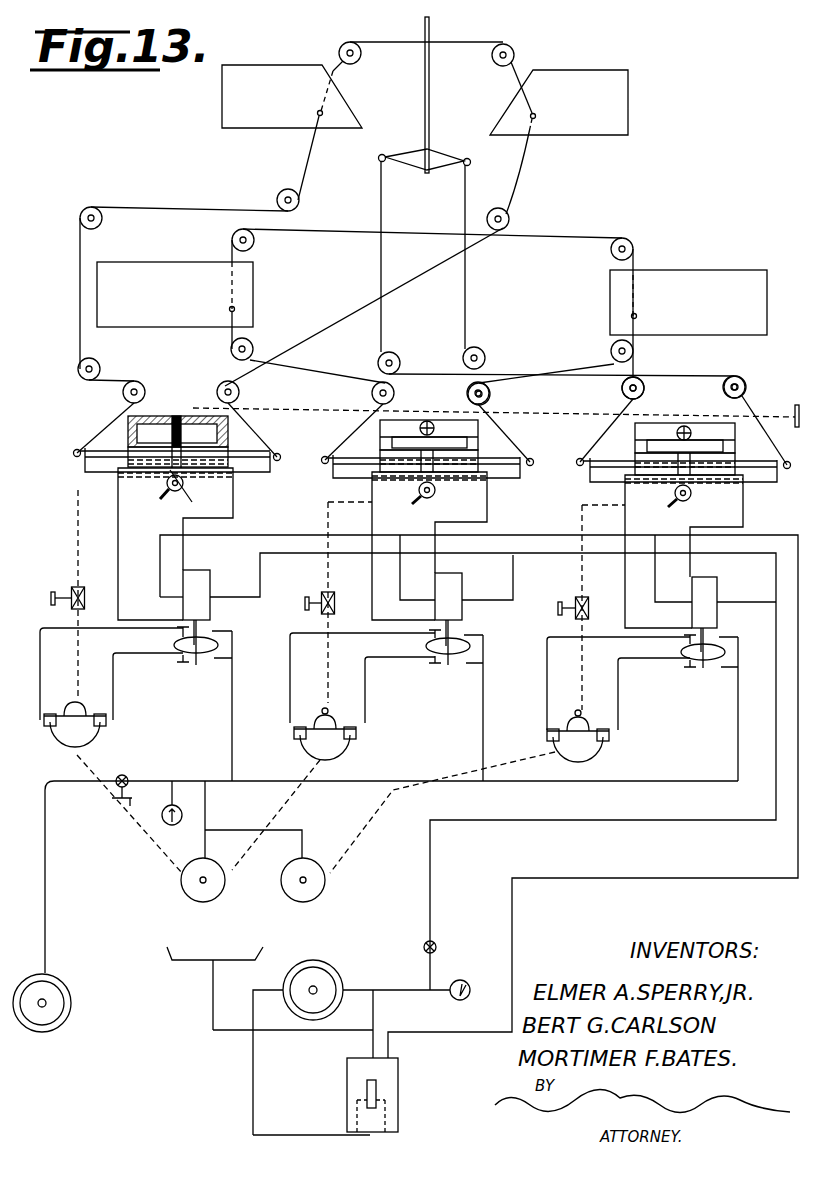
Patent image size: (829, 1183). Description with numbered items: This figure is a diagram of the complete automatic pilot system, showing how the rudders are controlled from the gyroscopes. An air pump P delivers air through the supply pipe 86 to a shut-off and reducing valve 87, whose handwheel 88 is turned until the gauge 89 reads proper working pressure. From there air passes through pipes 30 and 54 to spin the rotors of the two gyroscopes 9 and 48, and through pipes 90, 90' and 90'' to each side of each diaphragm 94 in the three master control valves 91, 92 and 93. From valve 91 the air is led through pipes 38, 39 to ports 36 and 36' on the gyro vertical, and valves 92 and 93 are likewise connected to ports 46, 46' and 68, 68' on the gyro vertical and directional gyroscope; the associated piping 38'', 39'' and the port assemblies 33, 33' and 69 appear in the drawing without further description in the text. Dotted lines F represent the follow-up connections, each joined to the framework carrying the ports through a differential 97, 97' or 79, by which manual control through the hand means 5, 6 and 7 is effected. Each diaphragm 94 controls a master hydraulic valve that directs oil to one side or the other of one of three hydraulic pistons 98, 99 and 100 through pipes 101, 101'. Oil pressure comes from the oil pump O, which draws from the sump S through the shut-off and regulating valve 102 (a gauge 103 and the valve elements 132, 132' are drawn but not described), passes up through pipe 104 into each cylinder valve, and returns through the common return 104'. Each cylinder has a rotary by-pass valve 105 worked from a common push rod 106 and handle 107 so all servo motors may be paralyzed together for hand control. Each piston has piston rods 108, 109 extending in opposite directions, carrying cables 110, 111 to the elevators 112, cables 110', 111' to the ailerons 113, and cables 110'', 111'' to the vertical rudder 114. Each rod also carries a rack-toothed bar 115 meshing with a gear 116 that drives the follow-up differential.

The elevators 112 is at (425, 100).
The vertical rudder 114 is at (429, 96).
The ailerons 113 is at (432, 298).
The cable 110 is at (180, 294).
The cable 110' is at (317, 360).
The cable 110'' is at (667, 396).
The cable 111 is at (364, 307).
The cable 111' is at (541, 435).
The cable 111'' is at (716, 357).
The rotary by-pass valve 105 is at (175, 416).
The push rod 106 is at (541, 411).
The handle 107 is at (800, 403).
The piston rod 109 is at (162, 448).
The piston rod 108 is at (225, 448).
The bar 115 is at (285, 468).
The pipe 101 is at (204, 504).
The pipe 101' is at (77, 490).
The hydraulic piston 98 is at (197, 495).
The gear 116 is at (165, 499).
The hydraulic piston 99 is at (437, 466).
The hydraulic piston 100 is at (690, 470).
The follow-up connection F is at (332, 600).
The common return 104' is at (479, 796).
The pipe 104 is at (493, 762).
The differential 97 is at (94, 583).
The differential gear train 97' is at (347, 587).
The differential connection 79 is at (590, 596).
The knob 6 is at (51, 596).
The adjusting knob 7 is at (305, 600).
The hand means 5 is at (558, 604).
The master control valve 91 is at (210, 607).
The master control valve 92 is at (462, 610).
The master control valve 93 is at (717, 614).
The diaphragm 132 is at (449, 643).
The diaphragm chamber 132' is at (475, 661).
The diaphragm 94 is at (437, 662).
The pipe 38 is at (111, 674).
The pipe 39 is at (148, 686).
The pipe 38'' is at (490, 681).
The pipe 39'' is at (527, 693).
The bellows 33 is at (63, 738).
The bellows 33' is at (312, 741).
The port 36 is at (50, 700).
The port 36' is at (101, 700).
The port 46 is at (306, 709).
The port 46' is at (353, 709).
The port 68 is at (559, 713).
The port 68' is at (605, 713).
The bellows 69 is at (590, 750).
The pipe 90 is at (253, 706).
The pipe 90' is at (461, 708).
The pipe 90'' is at (723, 709).
The supply pipe 86 is at (67, 877).
The air pump P is at (58, 990).
The shut-off and reducing valve 87 is at (128, 776).
The handwheel 88 is at (129, 814).
The gauge 89 is at (188, 806).
The pipe 30 is at (204, 840).
The pipe 54 is at (302, 836).
The gyroscope 9 is at (191, 889).
The gyroscope 48 is at (320, 890).
The oil pump O is at (328, 968).
The shut-off and regulating valve 102 is at (445, 932).
The gauge 103 is at (455, 1000).
The sump S is at (400, 1076).